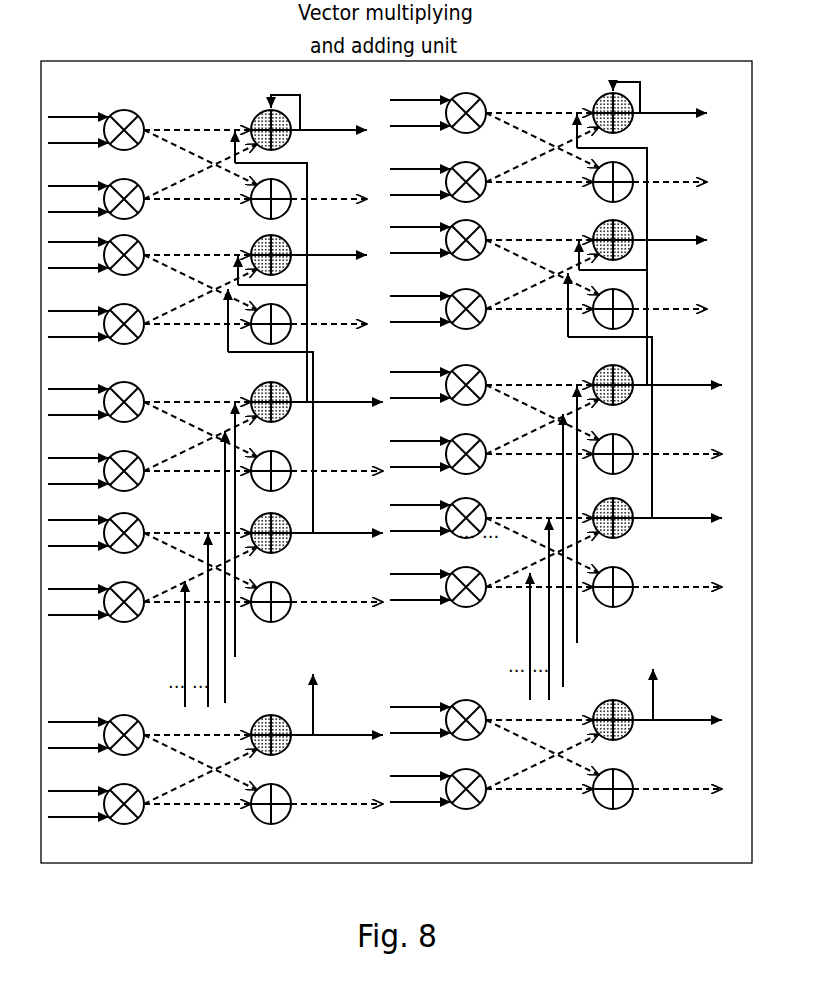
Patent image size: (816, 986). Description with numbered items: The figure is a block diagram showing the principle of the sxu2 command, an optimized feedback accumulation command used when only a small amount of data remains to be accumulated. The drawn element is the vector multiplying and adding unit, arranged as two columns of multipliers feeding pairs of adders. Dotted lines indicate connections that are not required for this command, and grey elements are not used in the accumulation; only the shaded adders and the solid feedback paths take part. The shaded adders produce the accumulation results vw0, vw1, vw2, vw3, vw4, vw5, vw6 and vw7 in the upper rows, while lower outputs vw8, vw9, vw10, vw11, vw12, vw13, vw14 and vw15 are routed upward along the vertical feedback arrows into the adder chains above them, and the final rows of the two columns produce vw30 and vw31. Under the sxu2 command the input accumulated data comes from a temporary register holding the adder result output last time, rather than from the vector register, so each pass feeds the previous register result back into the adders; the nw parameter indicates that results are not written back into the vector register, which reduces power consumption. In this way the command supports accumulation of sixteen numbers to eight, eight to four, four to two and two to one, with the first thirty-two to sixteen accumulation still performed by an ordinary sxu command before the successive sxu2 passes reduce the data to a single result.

The vector register accumulation output vw0 is at (650, 106).
The vector register accumulation output vw1 is at (309, 122).
The vector register accumulation output vw2 is at (654, 236).
The vector register accumulation output vw3 is at (312, 252).
The vector register accumulation output vw4 is at (657, 379).
The vector register accumulation output vw5 is at (317, 395).
The vector register accumulation output vw6 is at (657, 512).
The vector register accumulation output vw7 is at (317, 526).
The vector register accumulation output vw8 is at (604, 514).
The vector register accumulation output vw9 is at (262, 530).
The vector register accumulation output vw10 is at (592, 550).
The vector register accumulation output vw11 is at (253, 567).
The vector register accumulation output vw12 is at (552, 614).
The vector register accumulation output vw13 is at (197, 624).
The vector register accumulation output vw14 is at (500, 636).
The vector register accumulation output vw15 is at (156, 644).
The vector register accumulation output vw30 is at (657, 704).
The vector register accumulation output vw31 is at (317, 714).